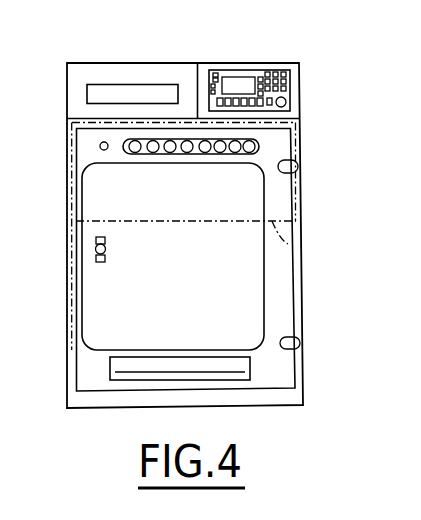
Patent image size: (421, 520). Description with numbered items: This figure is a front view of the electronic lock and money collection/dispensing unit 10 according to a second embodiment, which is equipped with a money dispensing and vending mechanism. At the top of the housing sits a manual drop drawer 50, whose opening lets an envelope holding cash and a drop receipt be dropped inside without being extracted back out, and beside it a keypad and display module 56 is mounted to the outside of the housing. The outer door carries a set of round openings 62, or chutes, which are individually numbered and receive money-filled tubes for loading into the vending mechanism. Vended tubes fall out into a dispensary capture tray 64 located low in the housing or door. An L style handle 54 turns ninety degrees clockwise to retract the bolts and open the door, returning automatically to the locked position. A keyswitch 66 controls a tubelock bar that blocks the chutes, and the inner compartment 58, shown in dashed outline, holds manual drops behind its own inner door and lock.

The electronic lock and money collection/dispensing unit 10 is at (376, 136).
The manual drop drawer 50 is at (135, 85).
The "L" style handle 54 is at (96, 240).
The keypad and display module 56 is at (290, 81).
The inner compartment 58 is at (293, 247).
The round openings 62 is at (259, 146).
The dispensary capture tray 64 is at (120, 357).
The keyswitch 66 is at (100, 146).